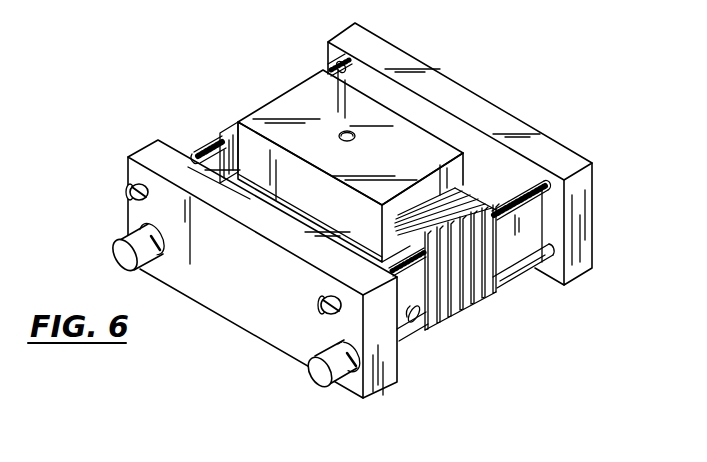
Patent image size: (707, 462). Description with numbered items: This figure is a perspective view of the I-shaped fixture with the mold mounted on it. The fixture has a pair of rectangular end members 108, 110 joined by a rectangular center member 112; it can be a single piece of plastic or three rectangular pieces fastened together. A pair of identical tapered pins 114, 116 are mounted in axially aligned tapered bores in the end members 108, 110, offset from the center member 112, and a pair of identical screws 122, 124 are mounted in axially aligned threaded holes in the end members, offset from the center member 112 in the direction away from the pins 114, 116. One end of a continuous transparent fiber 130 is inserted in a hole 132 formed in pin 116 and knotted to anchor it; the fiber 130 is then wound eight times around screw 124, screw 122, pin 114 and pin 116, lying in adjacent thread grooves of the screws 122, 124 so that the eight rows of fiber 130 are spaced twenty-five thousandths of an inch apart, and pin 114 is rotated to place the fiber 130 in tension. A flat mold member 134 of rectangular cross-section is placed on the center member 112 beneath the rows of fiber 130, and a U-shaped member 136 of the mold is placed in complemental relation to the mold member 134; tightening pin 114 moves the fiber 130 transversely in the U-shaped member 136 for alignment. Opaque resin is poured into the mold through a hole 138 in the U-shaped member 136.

The end member 108 is at (248, 320).
The end member 110 is at (497, 118).
The center member 112 is at (503, 240).
The tapered pin 114 is at (122, 254).
The tapered pin 116 is at (316, 377).
The screw 122 is at (125, 193).
The screw 124 is at (317, 312).
The transparent fiber 130 is at (483, 294).
The hole 132 is at (425, 322).
The mold member 134 is at (213, 144).
The U-shaped member 136 is at (233, 128).
The hole 138 is at (345, 131).